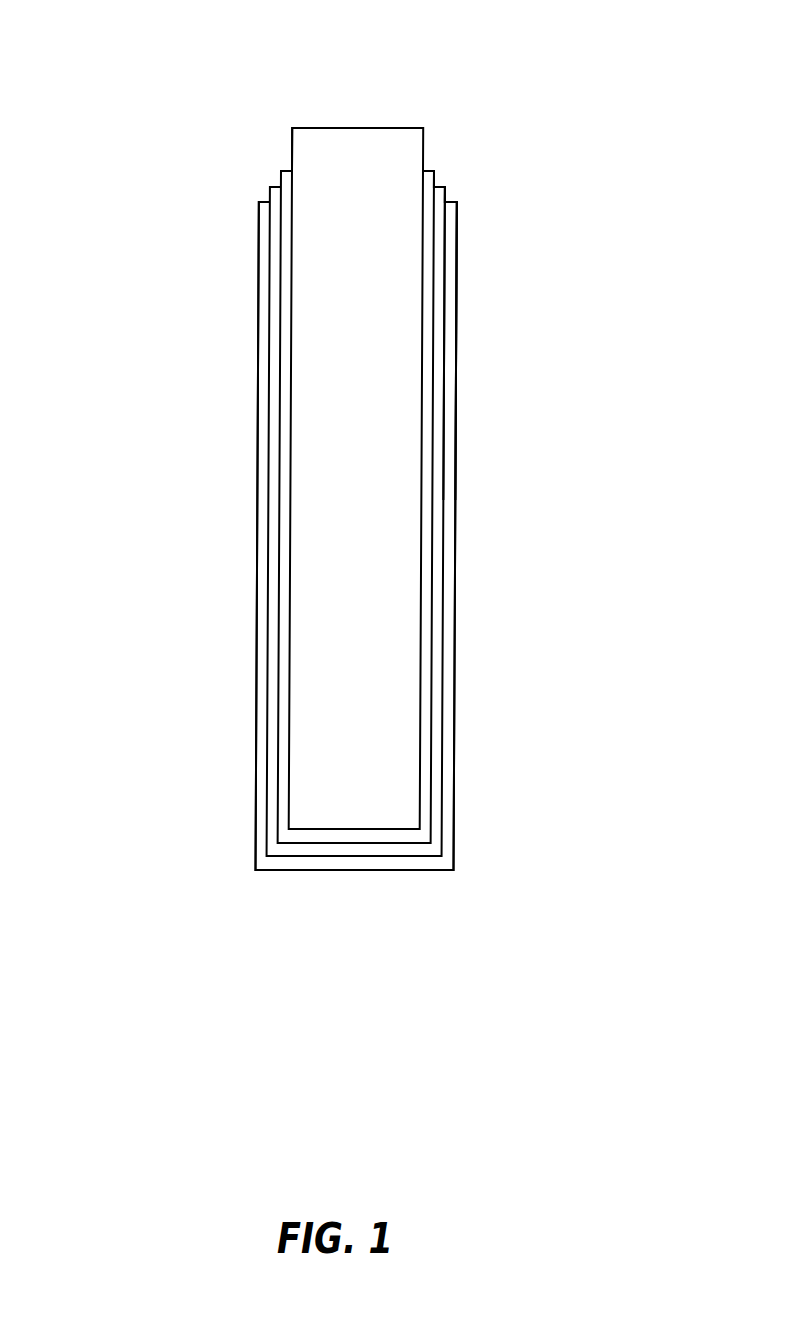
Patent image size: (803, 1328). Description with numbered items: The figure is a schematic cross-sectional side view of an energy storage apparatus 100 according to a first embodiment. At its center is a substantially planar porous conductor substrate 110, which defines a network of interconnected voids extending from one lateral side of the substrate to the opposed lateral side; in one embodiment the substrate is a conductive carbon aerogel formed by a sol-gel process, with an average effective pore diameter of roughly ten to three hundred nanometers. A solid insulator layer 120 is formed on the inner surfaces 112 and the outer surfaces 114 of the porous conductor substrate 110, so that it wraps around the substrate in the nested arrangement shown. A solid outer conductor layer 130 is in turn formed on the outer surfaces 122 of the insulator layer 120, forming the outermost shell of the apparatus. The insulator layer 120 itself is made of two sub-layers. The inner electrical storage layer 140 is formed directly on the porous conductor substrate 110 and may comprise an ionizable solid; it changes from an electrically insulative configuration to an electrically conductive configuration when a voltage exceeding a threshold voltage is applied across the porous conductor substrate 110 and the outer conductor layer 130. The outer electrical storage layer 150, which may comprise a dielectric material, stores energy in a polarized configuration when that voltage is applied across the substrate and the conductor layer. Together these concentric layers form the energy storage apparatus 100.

The energy storage apparatus 100 is at (509, 487).
The porous conductor substrate 110 is at (405, 167).
The inner surfaces 112 is at (387, 128).
The outer surfaces 114 is at (291, 130).
The insulator layer 120 is at (461, 163).
The outer surfaces 122 is at (447, 196).
The outer conductor layer 130 is at (263, 336).
The inner electrical storage layer 140 is at (278, 182).
The outer electrical storage layer 150 is at (276, 221).